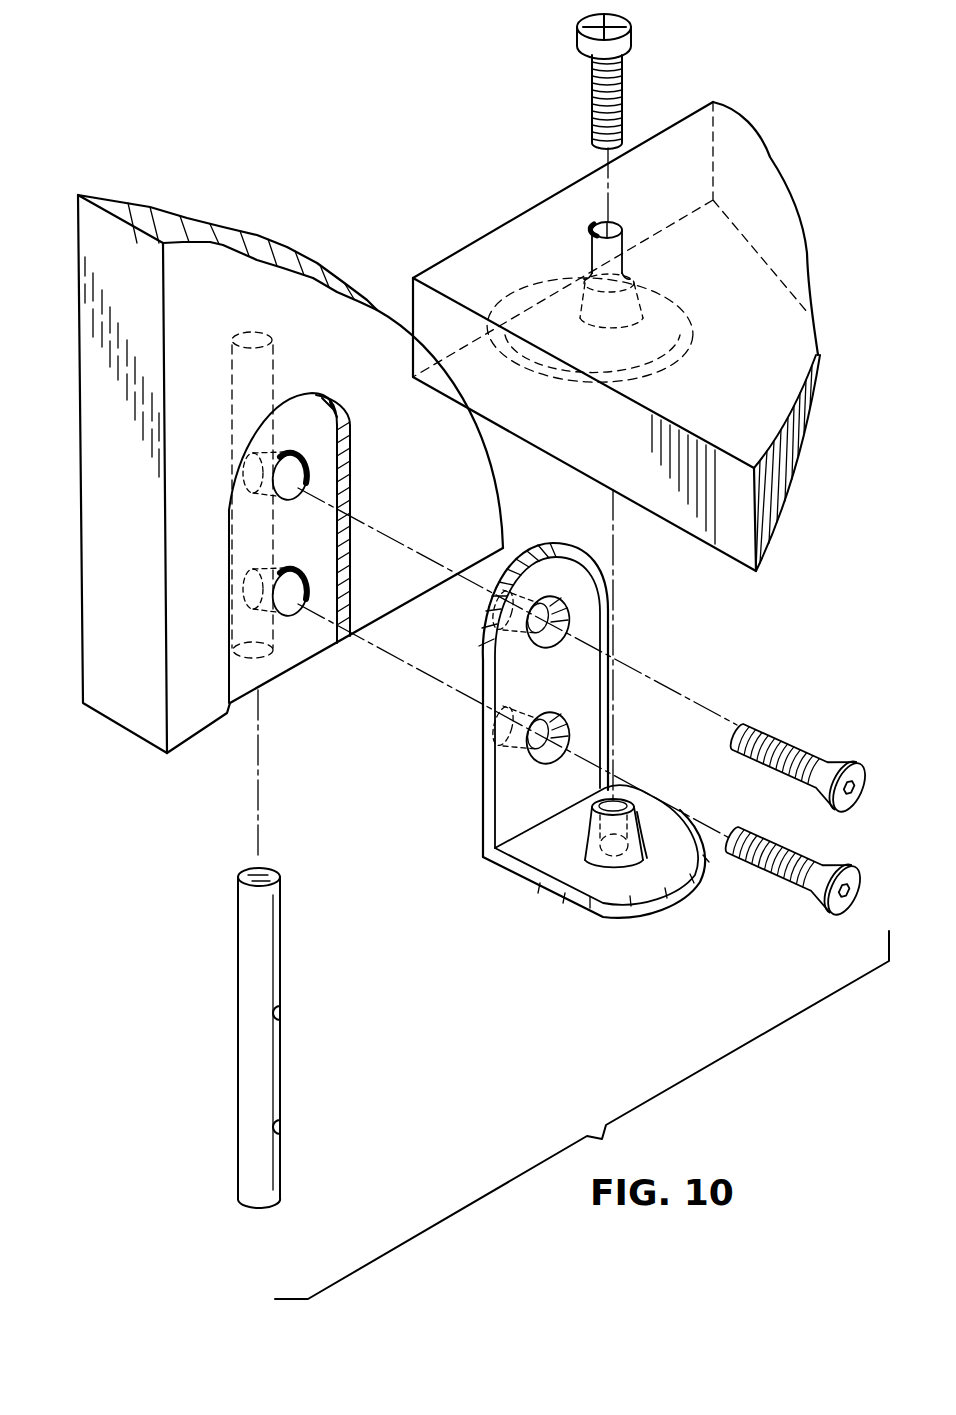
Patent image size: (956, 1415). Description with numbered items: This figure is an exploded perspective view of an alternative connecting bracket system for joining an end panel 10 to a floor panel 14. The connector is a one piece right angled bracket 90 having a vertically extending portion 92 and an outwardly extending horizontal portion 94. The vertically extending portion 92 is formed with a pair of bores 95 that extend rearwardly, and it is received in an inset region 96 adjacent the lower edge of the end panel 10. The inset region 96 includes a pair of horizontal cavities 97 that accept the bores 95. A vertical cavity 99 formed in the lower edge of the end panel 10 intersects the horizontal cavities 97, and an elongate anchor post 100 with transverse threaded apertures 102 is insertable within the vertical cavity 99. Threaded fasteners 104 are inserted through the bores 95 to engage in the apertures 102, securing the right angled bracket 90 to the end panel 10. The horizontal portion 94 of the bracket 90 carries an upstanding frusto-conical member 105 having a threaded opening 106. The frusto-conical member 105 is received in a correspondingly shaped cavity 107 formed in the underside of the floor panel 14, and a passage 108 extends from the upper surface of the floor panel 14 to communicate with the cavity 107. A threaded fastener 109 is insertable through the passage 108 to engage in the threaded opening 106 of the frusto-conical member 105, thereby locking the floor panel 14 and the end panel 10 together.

The end panel 10 is at (103, 520).
The floor panel 14 is at (765, 340).
The right angled bracket 90 is at (520, 877).
The vertically extending portion 92 is at (504, 780).
The outwardly extending horizontal portion 94 is at (650, 912).
The bores 95 is at (478, 625).
The inset region 96 is at (293, 638).
The horizontal cavities 97 is at (307, 478).
The vertical cavity 99 is at (262, 372).
The elongate anchor post 100 is at (262, 1190).
The transverse threaded apertures 102 is at (284, 1013).
The threaded fasteners 104 is at (802, 742).
The upstanding frusto-conical member 105 is at (597, 863).
The threaded opening 106 is at (596, 806).
The cavity 107 is at (585, 283).
The passage 108 is at (596, 232).
The threaded fastener 109 is at (577, 45).